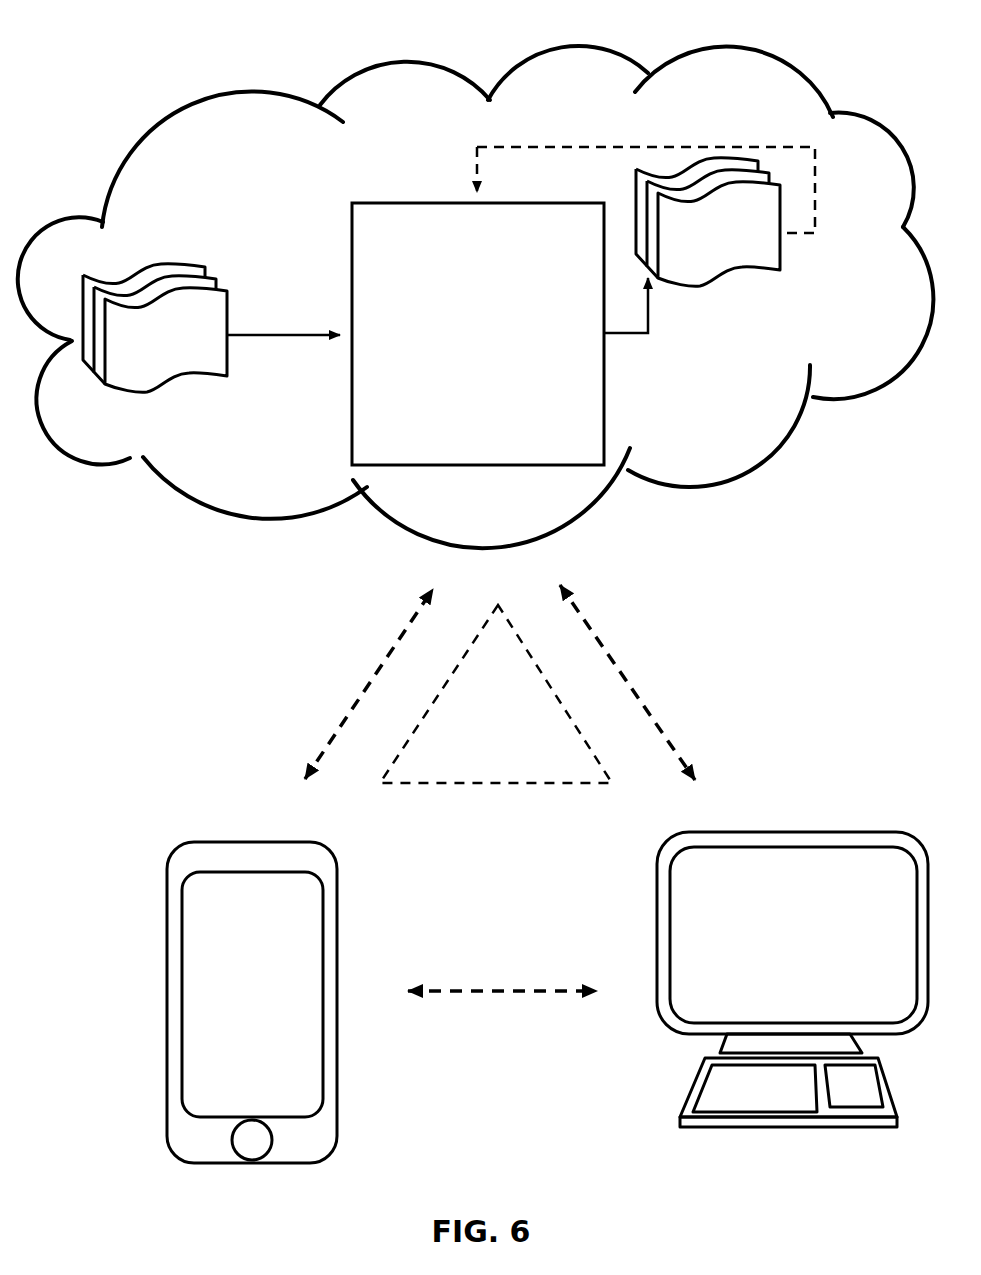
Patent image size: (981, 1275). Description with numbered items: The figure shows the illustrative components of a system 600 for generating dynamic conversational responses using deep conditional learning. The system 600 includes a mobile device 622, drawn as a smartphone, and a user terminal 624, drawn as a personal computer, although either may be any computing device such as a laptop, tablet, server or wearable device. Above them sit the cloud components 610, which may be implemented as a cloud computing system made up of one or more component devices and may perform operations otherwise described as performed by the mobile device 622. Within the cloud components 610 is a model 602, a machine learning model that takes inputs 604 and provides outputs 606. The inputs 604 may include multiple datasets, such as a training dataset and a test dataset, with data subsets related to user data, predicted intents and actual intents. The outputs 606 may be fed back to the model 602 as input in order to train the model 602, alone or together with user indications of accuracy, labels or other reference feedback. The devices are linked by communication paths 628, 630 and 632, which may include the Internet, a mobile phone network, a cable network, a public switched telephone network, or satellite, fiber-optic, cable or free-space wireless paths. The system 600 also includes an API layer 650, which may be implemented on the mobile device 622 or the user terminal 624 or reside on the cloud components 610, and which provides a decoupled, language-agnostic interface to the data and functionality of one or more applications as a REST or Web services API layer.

The system 600 is at (455, 42).
The model 602 is at (462, 346).
The inputs 604 is at (173, 264).
The outputs 606 is at (762, 274).
The cloud components 610 is at (779, 100).
The mobile device 622 is at (236, 810).
The user terminal 624 is at (789, 817).
The communication path 628 is at (321, 666).
The communication path 630 is at (710, 633).
The communication path 632 is at (496, 955).
The API layer 650 is at (480, 720).